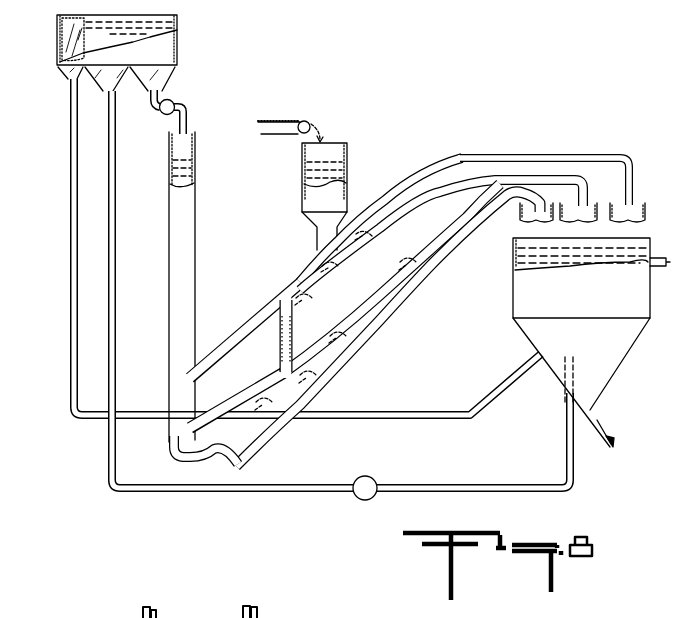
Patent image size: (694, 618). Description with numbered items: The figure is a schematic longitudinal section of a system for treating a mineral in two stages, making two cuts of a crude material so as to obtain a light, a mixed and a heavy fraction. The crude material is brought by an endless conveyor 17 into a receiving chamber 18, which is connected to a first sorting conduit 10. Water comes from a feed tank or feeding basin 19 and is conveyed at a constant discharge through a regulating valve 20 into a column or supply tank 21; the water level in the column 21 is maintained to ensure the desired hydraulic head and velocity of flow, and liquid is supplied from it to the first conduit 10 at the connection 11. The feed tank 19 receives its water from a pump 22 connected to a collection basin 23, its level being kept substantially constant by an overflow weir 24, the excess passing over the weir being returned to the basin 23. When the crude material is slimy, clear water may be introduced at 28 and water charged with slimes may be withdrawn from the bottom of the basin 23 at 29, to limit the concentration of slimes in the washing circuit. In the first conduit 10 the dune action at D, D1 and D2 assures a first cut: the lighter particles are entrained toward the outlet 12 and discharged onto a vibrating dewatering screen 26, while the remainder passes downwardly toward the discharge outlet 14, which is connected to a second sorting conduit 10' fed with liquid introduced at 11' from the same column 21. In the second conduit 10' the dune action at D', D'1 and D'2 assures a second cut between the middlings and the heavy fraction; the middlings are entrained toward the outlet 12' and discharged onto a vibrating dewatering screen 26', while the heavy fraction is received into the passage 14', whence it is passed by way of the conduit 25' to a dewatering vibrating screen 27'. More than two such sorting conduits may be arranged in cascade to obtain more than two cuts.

The first sorting conduit 10 is at (381, 220).
The second sorting conduit 10' is at (391, 279).
The liquid supply connection 11 is at (245, 330).
The liquid supply connection of second conduit 11' is at (235, 401).
The outlet 12 is at (543, 169).
The outlet of second conduit 12' is at (441, 223).
The discharge outlet 14 is at (271, 337).
The passage 14' is at (206, 454).
The endless conveyor 17 is at (286, 118).
The receiving chamber 18 is at (302, 190).
The feed tank 19 is at (60, 28).
The regulating valve 20 is at (172, 101).
The column 21 is at (193, 226).
The pump 22 is at (372, 485).
The collection basin 23 is at (630, 343).
The overflow weir 24 is at (301, 216).
The conduit 25' is at (388, 329).
The vibrating dewatering screen 26 is at (633, 202).
The vibrating dewatering screen 26' is at (589, 202).
The dewatering vibrating screen 27' is at (543, 202).
The clear water feed 28 is at (666, 264).
The slime withdrawal outlet 29 is at (601, 418).
The dune action D is at (337, 274).
The dune action D1 is at (366, 238).
The dune action D2 is at (304, 300).
The dune action D' is at (332, 382).
The dune action D'1 is at (397, 312).
The dune action D'2 is at (283, 421).